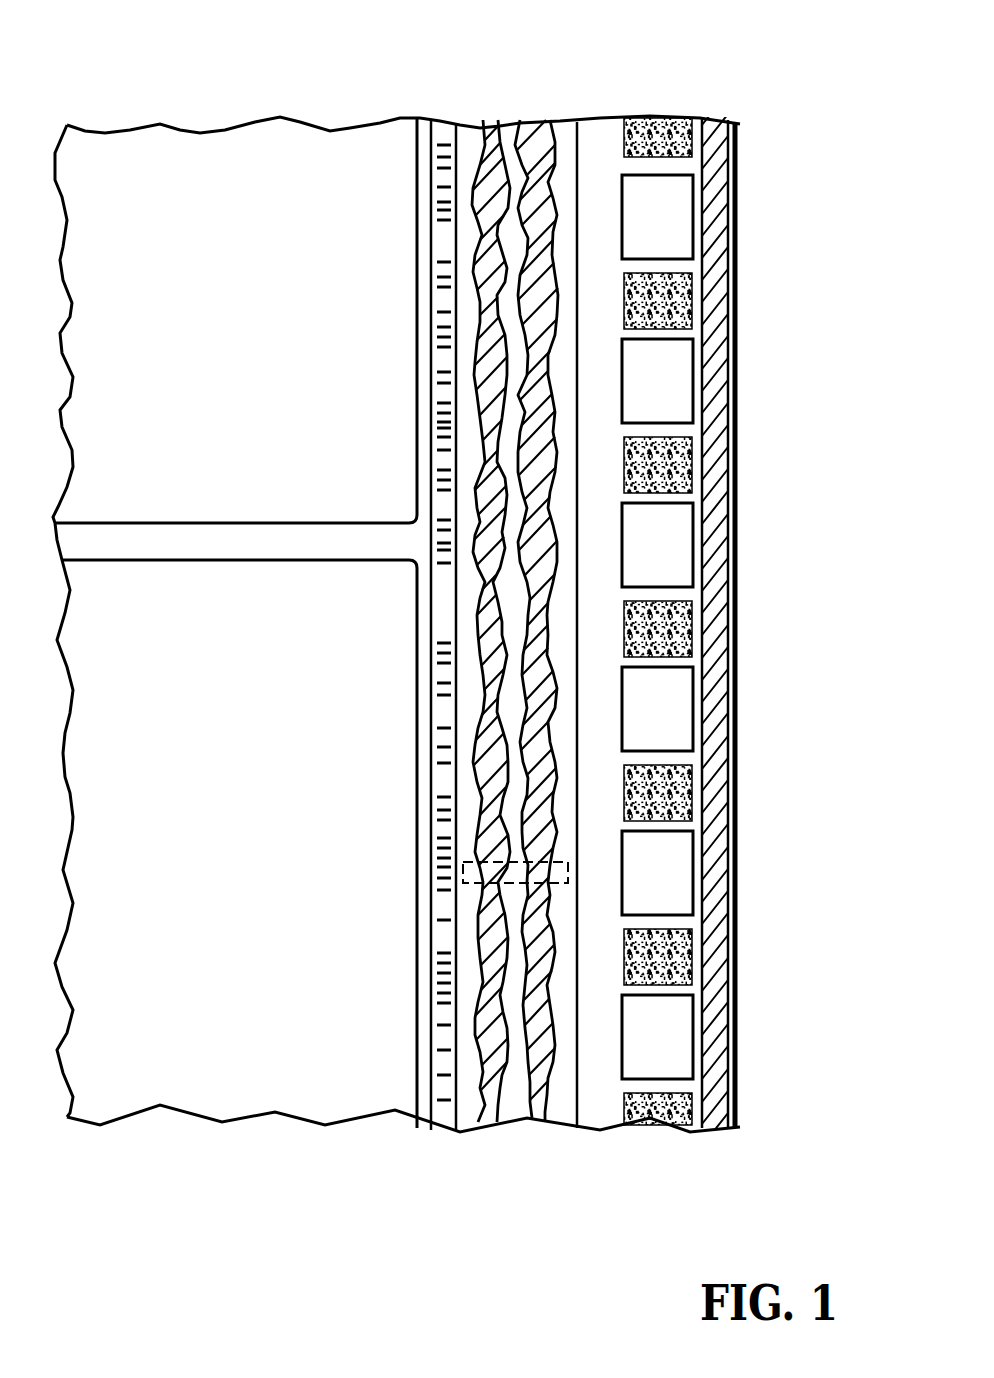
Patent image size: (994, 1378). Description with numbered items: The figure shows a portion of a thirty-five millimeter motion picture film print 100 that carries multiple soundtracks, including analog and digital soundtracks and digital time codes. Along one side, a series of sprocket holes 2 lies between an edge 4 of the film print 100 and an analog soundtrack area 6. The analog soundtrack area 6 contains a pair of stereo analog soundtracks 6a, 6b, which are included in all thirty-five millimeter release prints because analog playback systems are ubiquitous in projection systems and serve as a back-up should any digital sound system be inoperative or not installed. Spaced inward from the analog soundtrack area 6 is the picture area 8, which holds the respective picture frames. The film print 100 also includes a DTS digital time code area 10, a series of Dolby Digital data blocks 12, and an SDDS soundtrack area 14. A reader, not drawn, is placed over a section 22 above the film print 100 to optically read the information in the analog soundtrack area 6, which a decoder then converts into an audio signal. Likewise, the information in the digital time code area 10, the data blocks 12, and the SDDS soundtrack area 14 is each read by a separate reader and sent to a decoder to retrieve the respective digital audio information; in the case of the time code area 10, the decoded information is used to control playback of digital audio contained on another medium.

The motion picture film print 100 is at (772, 73).
The edge 4 is at (755, 191).
The picture area 8 is at (427, 105).
The digital time code area 10 is at (457, 105).
The analog soundtrack area 6 is at (575, 105).
The stereo analog soundtrack 6a is at (487, 1134).
The stereo analog soundtrack 6b is at (543, 1130).
The SDDS soundtrack area 14 is at (702, 107).
The sprocket holes 2 is at (693, 228).
The Dolby Digital data blocks 12 is at (692, 300).
The section 22 is at (568, 862).